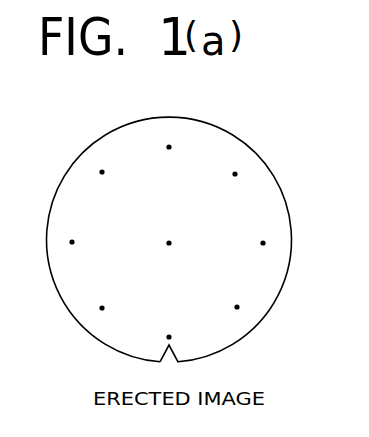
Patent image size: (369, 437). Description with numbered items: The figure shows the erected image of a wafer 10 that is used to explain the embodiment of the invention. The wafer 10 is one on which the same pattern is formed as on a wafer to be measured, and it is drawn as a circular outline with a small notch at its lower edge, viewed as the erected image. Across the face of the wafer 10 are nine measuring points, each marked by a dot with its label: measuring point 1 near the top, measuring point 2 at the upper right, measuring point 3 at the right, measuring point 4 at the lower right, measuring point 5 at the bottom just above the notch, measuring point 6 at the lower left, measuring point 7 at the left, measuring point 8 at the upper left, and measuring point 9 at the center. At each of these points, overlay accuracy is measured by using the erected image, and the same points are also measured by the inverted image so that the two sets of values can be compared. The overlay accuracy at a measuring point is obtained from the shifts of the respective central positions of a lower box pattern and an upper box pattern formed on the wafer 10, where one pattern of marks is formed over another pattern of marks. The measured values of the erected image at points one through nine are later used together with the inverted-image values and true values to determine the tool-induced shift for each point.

The wafer 10 is at (237, 153).
The measuring point 1 is at (187, 155).
The measuring point 2 is at (250, 186).
The measuring point 3 is at (268, 256).
The measuring point 4 is at (234, 320).
The measuring point 5 is at (187, 345).
The measuring point 6 is at (117, 320).
The measuring point 7 is at (70, 255).
The measuring point 8 is at (93, 186).
The measuring point 9 is at (170, 256).